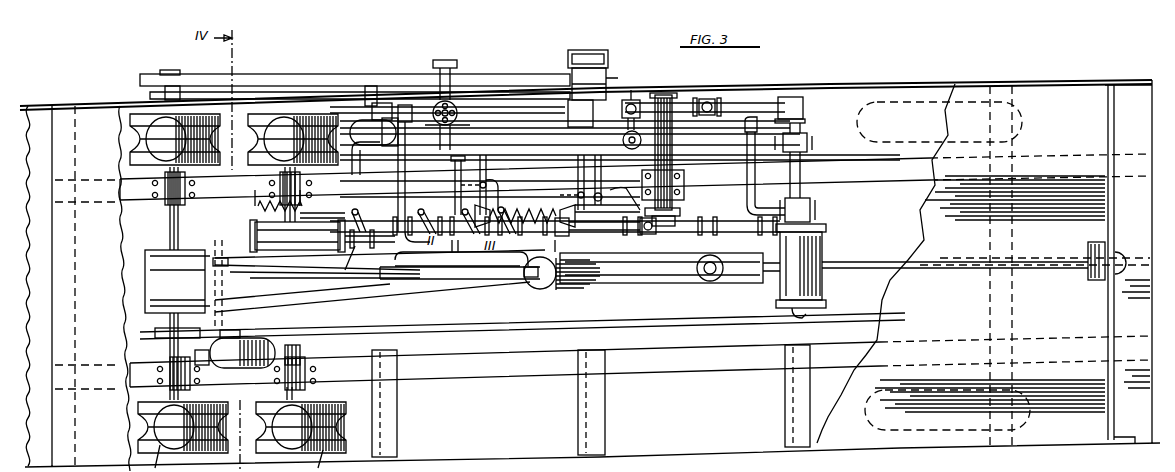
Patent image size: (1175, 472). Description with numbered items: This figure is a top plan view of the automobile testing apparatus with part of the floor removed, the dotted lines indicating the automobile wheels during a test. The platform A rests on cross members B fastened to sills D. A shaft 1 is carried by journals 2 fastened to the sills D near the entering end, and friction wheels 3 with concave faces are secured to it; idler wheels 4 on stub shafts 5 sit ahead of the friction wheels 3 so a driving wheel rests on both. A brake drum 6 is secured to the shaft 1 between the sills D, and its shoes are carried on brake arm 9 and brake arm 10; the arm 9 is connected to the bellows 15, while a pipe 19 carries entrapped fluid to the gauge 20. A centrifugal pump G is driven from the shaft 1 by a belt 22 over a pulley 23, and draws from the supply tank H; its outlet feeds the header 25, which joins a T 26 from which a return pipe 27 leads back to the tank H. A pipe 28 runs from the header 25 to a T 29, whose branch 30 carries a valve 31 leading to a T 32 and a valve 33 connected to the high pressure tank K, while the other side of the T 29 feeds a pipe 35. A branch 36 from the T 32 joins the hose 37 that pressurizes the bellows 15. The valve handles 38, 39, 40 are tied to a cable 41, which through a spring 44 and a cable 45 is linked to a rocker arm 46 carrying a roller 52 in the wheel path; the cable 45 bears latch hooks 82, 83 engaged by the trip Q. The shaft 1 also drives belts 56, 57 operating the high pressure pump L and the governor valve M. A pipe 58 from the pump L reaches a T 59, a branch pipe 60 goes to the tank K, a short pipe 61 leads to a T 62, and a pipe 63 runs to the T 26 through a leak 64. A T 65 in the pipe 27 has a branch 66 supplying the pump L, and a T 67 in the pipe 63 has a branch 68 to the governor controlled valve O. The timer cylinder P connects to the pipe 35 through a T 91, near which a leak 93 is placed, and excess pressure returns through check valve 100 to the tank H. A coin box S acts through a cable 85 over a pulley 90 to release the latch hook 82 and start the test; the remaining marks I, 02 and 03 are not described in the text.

The shaft 1 is at (172, 228).
The journals 2 is at (168, 200).
The friction wheels 3 is at (135, 112).
The idler wheels 4 is at (300, 100).
The stub shafts 5 is at (302, 352).
The brake drum 6 is at (145, 285).
The brake arm 9 is at (530, 278).
The brake arm 10 is at (632, 236).
The bellows 15 is at (553, 284).
The pipe 19 is at (862, 270).
The gauge 20 is at (1100, 252).
The belt 22 is at (482, 178).
The pulley 23 is at (155, 326).
The header 25 is at (578, 178).
The T 26 is at (800, 142).
The return pipe 27 is at (800, 185).
The pipe 28 is at (460, 210).
The T 29 is at (466, 245).
The branch 30 is at (520, 232).
The valve 31 is at (392, 220).
The T 32 is at (370, 270).
The valve 33 is at (330, 262).
The pipe 35 is at (567, 221).
The branch 36 is at (461, 249).
The flexible conduit or hose 37 is at (495, 280).
The handle 38 is at (421, 208).
The handle 39 is at (355, 208).
The handle 40 is at (496, 214).
The cable 41 is at (455, 190).
The spring 44 is at (530, 209).
The cable 45 is at (625, 191).
The rocker arm 46 is at (670, 172).
The roller 52 is at (690, 103).
The belt 56 is at (200, 92).
The belt 57 is at (265, 75).
The pipe 58 is at (385, 103).
The T 59 is at (442, 100).
The branch pipe 60 is at (356, 153).
The short pipe 61 is at (446, 60).
The T 62 is at (452, 104).
The pipe 63 is at (495, 121).
The bleeder or leak 64 is at (712, 99).
The T 65 is at (810, 210).
The branch 66 is at (762, 215).
The T 67 is at (631, 100).
The branch 68 is at (664, 95).
The latch hook 82 is at (498, 180).
The latch hook 83 is at (585, 206).
The cable 85 is at (606, 82).
The pulley 90 is at (596, 187).
The T 91 is at (600, 226).
The leak 93 is at (652, 234).
The check valve 100 is at (372, 86).
The rod 02 is at (325, 213).
The spring 03 is at (258, 208).
The platform A is at (1058, 86).
The cross members B is at (788, 398).
The sills D is at (887, 178).
The centrifugal pump G is at (255, 340).
The supply cylinder or tank H is at (822, 250).
The section line I is at (357, 254).
The high pressure tank K is at (297, 236).
The high pressure pump L is at (360, 125).
The governor valve M is at (470, 118).
The governor controlled valve O is at (634, 149).
The timer cylinder P is at (578, 274).
The trip Q is at (579, 179).
The coin box S is at (600, 50).